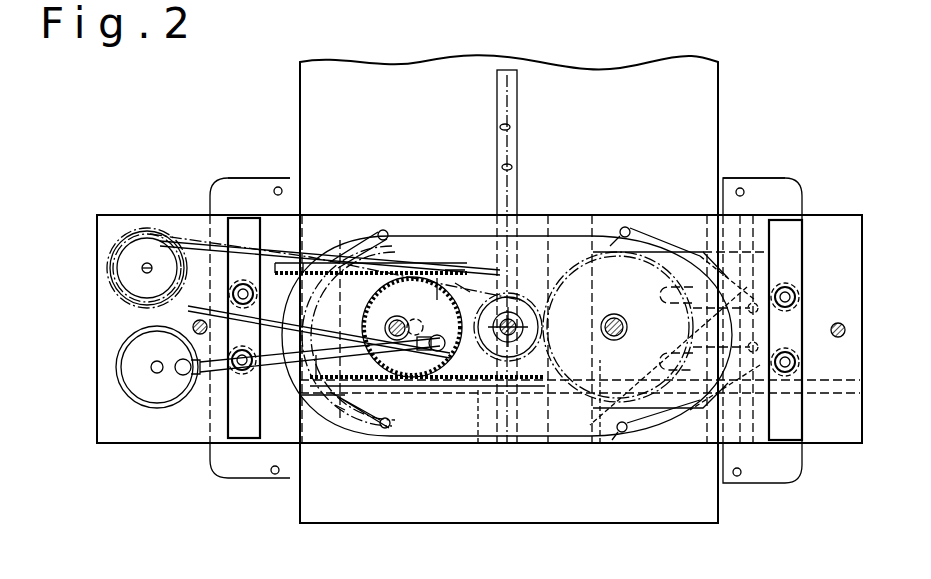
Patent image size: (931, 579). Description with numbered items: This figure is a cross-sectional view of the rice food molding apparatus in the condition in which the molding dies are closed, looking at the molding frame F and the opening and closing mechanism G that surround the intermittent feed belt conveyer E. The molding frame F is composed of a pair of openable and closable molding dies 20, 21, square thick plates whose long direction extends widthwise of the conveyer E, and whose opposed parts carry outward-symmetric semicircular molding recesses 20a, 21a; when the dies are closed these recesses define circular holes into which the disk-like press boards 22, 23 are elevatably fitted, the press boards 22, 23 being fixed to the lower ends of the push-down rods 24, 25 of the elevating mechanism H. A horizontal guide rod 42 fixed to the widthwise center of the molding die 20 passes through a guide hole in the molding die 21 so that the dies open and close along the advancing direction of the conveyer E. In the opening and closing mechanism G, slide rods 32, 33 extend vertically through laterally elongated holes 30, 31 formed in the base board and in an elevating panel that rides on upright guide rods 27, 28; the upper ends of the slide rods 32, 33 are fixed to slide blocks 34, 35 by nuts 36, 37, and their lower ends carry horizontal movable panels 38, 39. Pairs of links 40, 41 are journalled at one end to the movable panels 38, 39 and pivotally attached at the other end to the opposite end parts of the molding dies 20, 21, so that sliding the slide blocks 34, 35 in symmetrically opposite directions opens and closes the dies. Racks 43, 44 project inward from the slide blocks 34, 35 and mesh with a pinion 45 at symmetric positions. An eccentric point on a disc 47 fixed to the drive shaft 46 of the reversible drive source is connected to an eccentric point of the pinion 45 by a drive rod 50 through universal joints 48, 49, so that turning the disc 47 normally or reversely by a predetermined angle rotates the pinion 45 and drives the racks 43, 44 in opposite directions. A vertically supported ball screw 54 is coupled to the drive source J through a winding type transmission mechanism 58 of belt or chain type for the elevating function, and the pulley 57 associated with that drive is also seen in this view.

The intermittent feed belt conveyer E is at (296, 75).
The molding frame F is at (548, 213).
The opening and closing mechanism G is at (418, 388).
The elevating mechanism H is at (198, 236).
The drive source J is at (134, 232).
The molding die 20 is at (686, 486).
The molding recess 20a is at (568, 480).
The molding die 21 is at (650, 213).
The molding recess 21a is at (592, 243).
The press board 22 is at (345, 411).
The press board 23 is at (602, 425).
The push-down rod 24 is at (404, 318).
The push-down rod 25 is at (613, 313).
The guide rod 27 is at (192, 325).
The guide rod 28 is at (838, 338).
The laterally elongated hole 30 is at (340, 240).
The laterally elongated hole 31 is at (770, 272).
The slide rod 32 is at (237, 287).
The slide rod 33 is at (797, 297).
The slide block 34 is at (247, 425).
The slide block 35 is at (795, 425).
The nut 36 is at (242, 282).
The nut 37 is at (790, 290).
The movable panel 38 is at (275, 178).
The movable panel 39 is at (768, 192).
The link 40 is at (392, 497).
The link 41 is at (633, 488).
The horizontal guide rod 42 is at (498, 98).
The rack 43 is at (478, 440).
The rack 44 is at (456, 283).
The pinion 45 is at (437, 276).
The drive shaft 46 is at (155, 373).
The disc 47 is at (133, 368).
The universal joint 48 is at (180, 376).
The universal joint 49 is at (438, 352).
The drive rod 50 is at (316, 383).
The ball screw 54 is at (513, 316).
The pulley 57 is at (125, 268).
The winding type transmission mechanism 58 is at (270, 250).